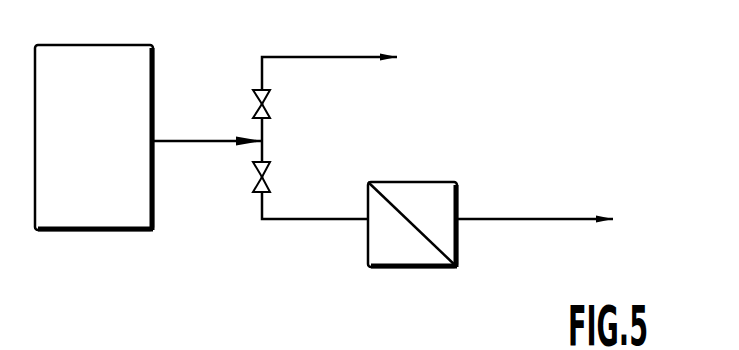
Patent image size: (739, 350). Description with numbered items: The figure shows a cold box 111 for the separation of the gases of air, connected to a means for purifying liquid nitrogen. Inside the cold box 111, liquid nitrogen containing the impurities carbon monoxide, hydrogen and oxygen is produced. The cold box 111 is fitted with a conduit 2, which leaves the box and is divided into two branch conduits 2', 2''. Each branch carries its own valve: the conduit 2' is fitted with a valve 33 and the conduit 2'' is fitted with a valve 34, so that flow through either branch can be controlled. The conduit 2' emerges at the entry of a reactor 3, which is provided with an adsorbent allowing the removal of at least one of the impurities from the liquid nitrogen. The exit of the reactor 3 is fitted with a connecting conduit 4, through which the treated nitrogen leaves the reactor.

The cold box 111 is at (119, 233).
The conduit 2 is at (207, 166).
The conduit 2'' is at (329, 98).
The conduit 2' is at (315, 180).
The valve 34 is at (257, 102).
The valve 33 is at (257, 182).
The reactor 3 is at (428, 181).
The connecting conduit 4 is at (513, 217).